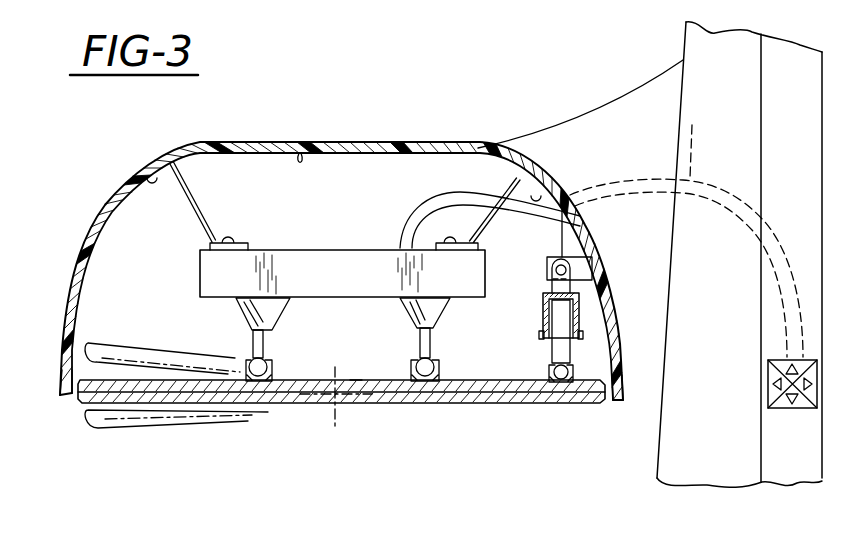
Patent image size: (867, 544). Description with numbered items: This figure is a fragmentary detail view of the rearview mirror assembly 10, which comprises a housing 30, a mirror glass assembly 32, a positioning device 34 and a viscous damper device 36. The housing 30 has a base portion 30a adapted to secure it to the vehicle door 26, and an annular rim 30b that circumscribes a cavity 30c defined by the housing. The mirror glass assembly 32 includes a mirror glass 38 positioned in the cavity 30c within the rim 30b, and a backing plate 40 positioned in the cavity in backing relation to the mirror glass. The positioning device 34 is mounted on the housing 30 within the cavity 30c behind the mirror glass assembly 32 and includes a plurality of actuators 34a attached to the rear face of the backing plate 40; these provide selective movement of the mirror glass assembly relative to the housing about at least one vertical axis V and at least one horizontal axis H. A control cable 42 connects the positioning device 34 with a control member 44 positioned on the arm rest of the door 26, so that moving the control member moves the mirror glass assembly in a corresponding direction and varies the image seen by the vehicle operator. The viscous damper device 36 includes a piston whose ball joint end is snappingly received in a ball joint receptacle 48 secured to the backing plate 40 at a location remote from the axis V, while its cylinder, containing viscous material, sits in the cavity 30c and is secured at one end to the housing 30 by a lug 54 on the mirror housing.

The rearview mirror assembly 10 is at (345, 103).
The vehicle door 26 is at (648, 470).
The housing 30 is at (478, 137).
The base portion 30a is at (591, 113).
The annular rim 30b is at (62, 385).
The cavity 30c is at (298, 141).
The mirror glass assembly 32 is at (262, 414).
The positioning device 34 is at (362, 222).
The actuators 34a is at (238, 304).
The viscous damper device 36 is at (592, 325).
The mirror glass 38 is at (397, 404).
The backing plate 40 is at (356, 380).
The control cable 42 is at (692, 126).
The control member 44 is at (787, 410).
The ball joint receptacle 48 is at (547, 404).
The lug 54 is at (567, 191).
The horizontal axis H is at (317, 392).
The vertical axis V is at (335, 428).